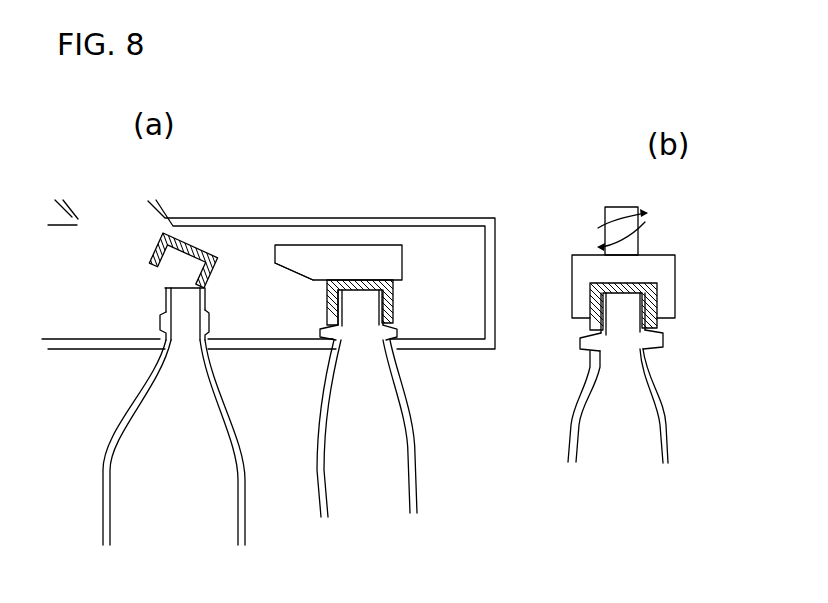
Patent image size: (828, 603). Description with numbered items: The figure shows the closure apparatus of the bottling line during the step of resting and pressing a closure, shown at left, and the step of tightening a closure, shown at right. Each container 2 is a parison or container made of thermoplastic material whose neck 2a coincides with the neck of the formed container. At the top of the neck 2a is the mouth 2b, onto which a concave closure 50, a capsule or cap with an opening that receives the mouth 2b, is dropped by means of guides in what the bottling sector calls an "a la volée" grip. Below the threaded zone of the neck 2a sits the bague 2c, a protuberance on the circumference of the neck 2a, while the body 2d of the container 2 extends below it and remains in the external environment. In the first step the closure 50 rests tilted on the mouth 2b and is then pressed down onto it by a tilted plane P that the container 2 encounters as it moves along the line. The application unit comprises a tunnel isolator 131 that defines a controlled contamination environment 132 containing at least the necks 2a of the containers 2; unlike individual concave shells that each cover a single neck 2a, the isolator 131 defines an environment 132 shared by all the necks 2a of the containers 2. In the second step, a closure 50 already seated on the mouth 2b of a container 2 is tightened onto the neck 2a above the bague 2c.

The container 2 is at (387, 387).
The neck 2a is at (165, 293).
The mouth 2b is at (183, 290).
The bague 2c is at (163, 328).
The body 2d is at (742, 370).
The closure 50 is at (194, 242).
The tunnel isolator 131 is at (425, 217).
The controlled contamination environment 132 is at (450, 280).
The tilted plane P is at (292, 278).